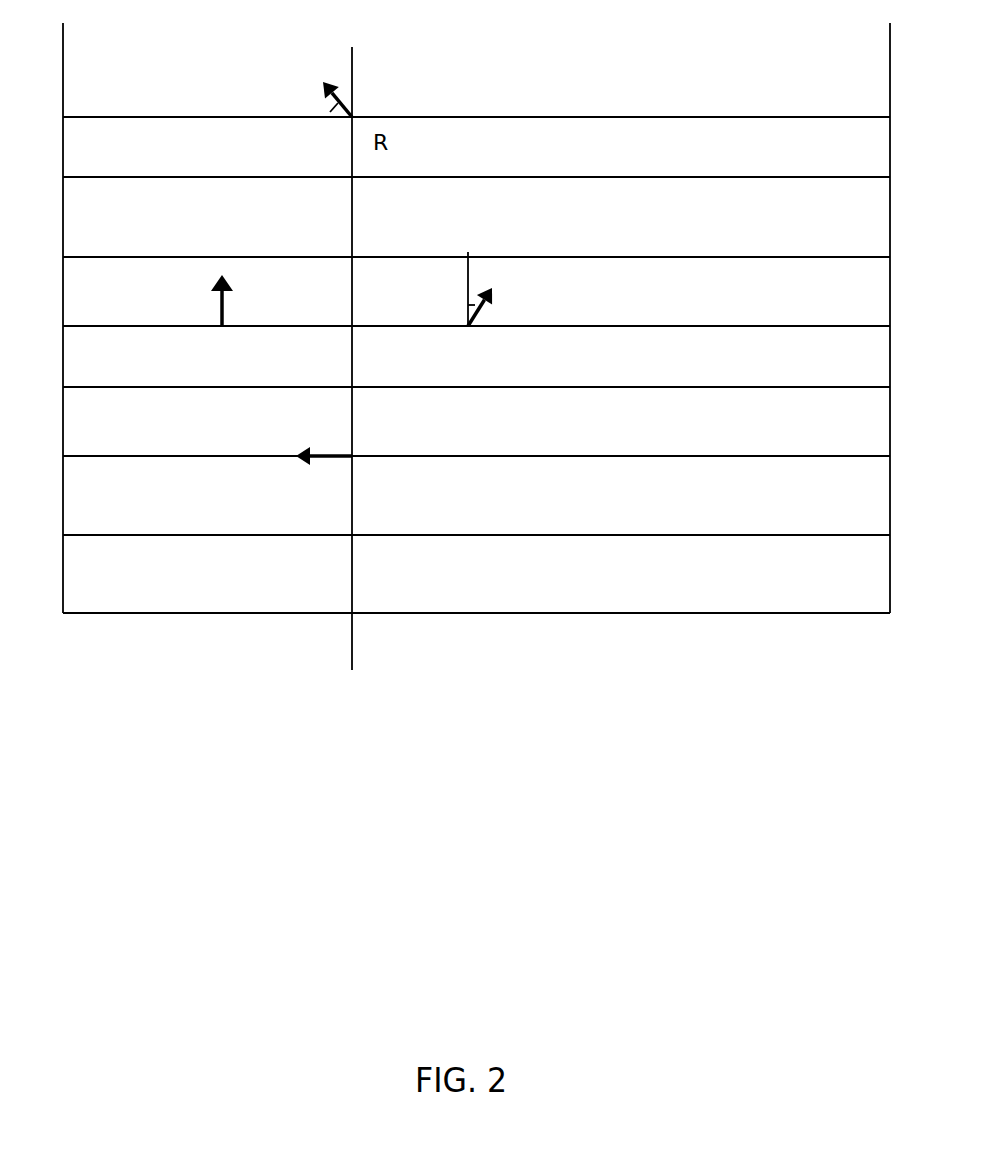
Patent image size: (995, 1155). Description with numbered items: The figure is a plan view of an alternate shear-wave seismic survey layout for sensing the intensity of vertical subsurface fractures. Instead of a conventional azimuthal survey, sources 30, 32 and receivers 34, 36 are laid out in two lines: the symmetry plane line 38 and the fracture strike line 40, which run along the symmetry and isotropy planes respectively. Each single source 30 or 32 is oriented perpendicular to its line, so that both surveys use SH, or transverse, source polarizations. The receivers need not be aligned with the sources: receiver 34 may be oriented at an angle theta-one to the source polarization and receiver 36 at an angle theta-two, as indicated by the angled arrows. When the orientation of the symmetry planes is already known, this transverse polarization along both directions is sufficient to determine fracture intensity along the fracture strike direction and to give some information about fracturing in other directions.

The source 30 is at (314, 450).
The source 32 is at (246, 314).
The receiver 34 is at (319, 83).
The receiver 36 is at (486, 319).
The symmetry plane line 38 is at (448, 342).
The fracture strike line 40 is at (476, 142).